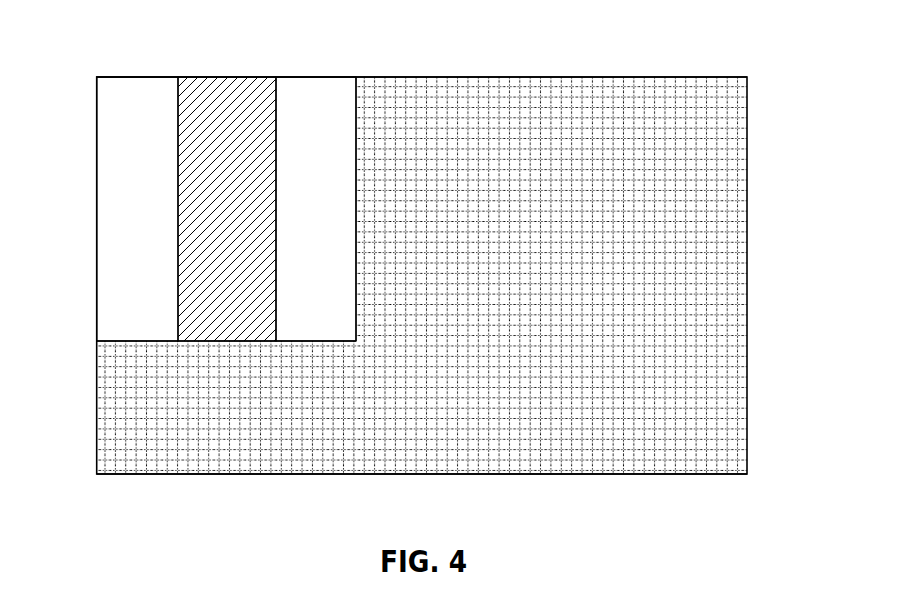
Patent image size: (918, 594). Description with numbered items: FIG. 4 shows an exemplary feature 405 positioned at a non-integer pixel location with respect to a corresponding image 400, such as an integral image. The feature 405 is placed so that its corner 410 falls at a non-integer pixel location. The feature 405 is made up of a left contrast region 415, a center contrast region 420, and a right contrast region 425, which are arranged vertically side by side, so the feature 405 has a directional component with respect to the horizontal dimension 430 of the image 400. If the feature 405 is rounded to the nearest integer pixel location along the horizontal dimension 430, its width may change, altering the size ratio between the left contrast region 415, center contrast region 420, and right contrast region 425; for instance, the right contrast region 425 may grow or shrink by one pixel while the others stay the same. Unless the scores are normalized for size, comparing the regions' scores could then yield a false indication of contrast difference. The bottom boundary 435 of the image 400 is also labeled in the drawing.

The image 400 is at (747, 263).
The feature 405 is at (258, 77).
The corner 410 is at (357, 341).
The left contrast region 415 is at (138, 341).
The center contrast region 420 is at (227, 341).
The right contrast region 425 is at (305, 341).
The horizontal dimension 430 is at (97, 395).
The bottom surface 435 is at (342, 474).